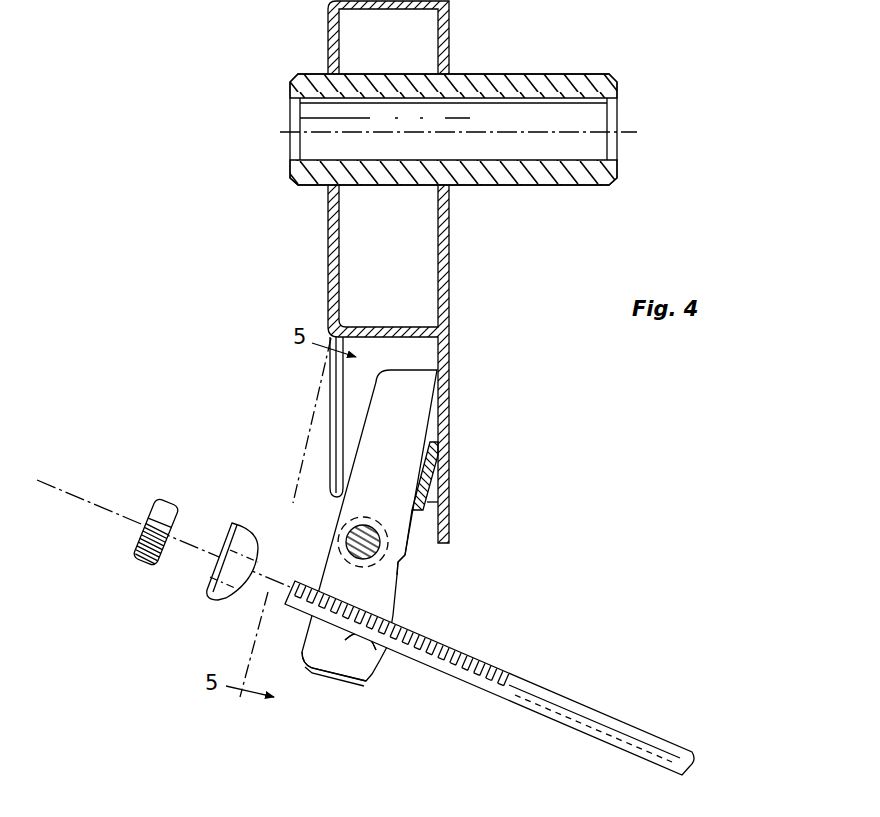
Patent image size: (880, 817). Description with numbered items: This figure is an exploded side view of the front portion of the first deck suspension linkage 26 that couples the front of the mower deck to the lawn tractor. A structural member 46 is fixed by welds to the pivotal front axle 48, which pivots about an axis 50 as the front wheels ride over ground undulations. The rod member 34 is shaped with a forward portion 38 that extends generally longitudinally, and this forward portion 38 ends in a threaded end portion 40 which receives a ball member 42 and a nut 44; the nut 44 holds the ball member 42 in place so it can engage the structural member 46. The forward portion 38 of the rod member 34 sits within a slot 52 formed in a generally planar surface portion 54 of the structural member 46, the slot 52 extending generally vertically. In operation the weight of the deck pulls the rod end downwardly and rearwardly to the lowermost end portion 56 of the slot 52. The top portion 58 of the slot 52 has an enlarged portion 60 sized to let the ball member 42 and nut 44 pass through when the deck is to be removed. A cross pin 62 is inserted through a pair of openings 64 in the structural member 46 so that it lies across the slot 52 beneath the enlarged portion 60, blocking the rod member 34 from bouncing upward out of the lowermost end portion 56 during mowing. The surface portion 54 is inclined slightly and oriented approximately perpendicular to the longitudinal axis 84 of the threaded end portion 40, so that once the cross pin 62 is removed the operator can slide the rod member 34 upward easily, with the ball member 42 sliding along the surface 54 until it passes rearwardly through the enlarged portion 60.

The first deck suspension linkage 26 is at (592, 472).
The rod member 34 is at (489, 678).
The forward portion 38 is at (413, 668).
The threaded end portion 40 is at (460, 680).
The ball member 42 is at (255, 527).
The nut 44 is at (180, 505).
The structural member 46 is at (410, 562).
The front axle 48 is at (449, 232).
The axis 50 is at (637, 130).
The slot 52 is at (420, 522).
The planar surface portion 54 is at (425, 472).
The lowermost end portion 56 is at (343, 640).
The top portion 58 is at (420, 530).
The enlarged portion 60 is at (405, 552).
The cross pin 62 is at (373, 518).
The openings 64 is at (346, 542).
The longitudinal axis 84 is at (70, 458).